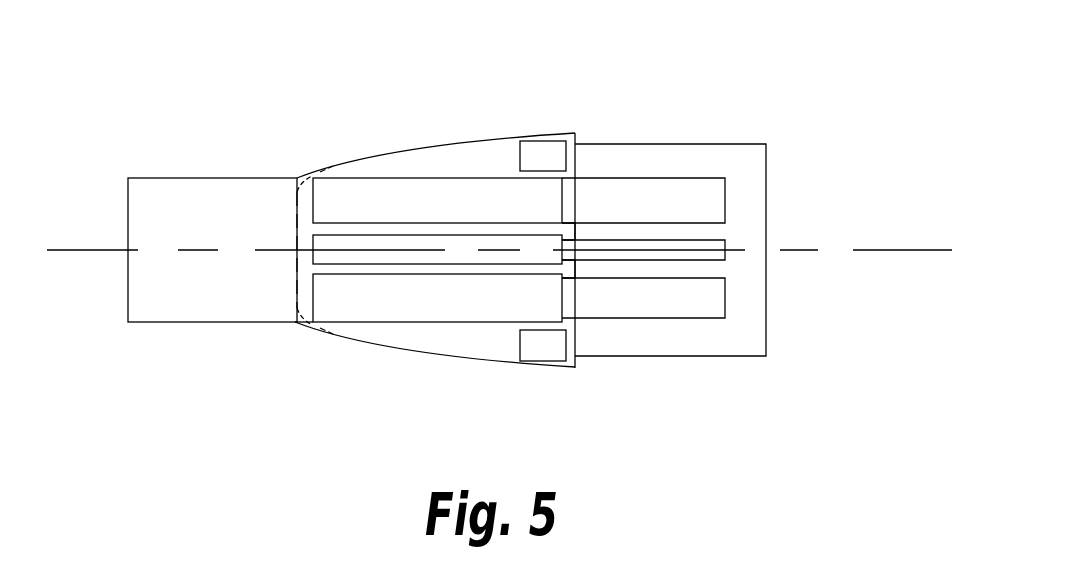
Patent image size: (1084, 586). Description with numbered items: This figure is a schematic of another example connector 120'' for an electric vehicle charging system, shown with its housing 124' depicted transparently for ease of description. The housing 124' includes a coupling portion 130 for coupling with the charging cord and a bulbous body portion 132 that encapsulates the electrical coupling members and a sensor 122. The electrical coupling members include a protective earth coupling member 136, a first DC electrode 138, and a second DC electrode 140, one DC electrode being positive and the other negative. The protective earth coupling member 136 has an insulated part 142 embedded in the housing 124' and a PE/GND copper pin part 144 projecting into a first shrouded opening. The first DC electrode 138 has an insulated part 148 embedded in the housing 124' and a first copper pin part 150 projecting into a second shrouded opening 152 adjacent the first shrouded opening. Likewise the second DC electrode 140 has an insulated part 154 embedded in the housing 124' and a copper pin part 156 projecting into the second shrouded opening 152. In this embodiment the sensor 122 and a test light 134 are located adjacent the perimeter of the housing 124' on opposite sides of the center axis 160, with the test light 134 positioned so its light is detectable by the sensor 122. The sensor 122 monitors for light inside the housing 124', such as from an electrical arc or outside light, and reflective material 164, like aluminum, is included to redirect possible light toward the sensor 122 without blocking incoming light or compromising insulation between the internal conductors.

The connector 120'' is at (698, 184).
The sensor 122 is at (537, 150).
The housing 124' is at (436, 114).
The coupling portion 130 is at (175, 202).
The body portion 132 is at (382, 163).
The test light 134 is at (532, 347).
The protective earth coupling member 136 is at (686, 226).
The first DC electrode 138 is at (338, 161).
The second DC electrode 140 is at (389, 338).
The insulated part 142 is at (327, 255).
The PE/GND copper pin part 144 is at (723, 250).
The insulated part 148 is at (330, 197).
The first copper pin part 150 is at (622, 200).
The second shrouded opening 152 is at (767, 176).
The insulated part 154 is at (332, 302).
The copper pin part 156 is at (662, 302).
The center axis 160 is at (898, 252).
The reflective material 164 is at (297, 292).